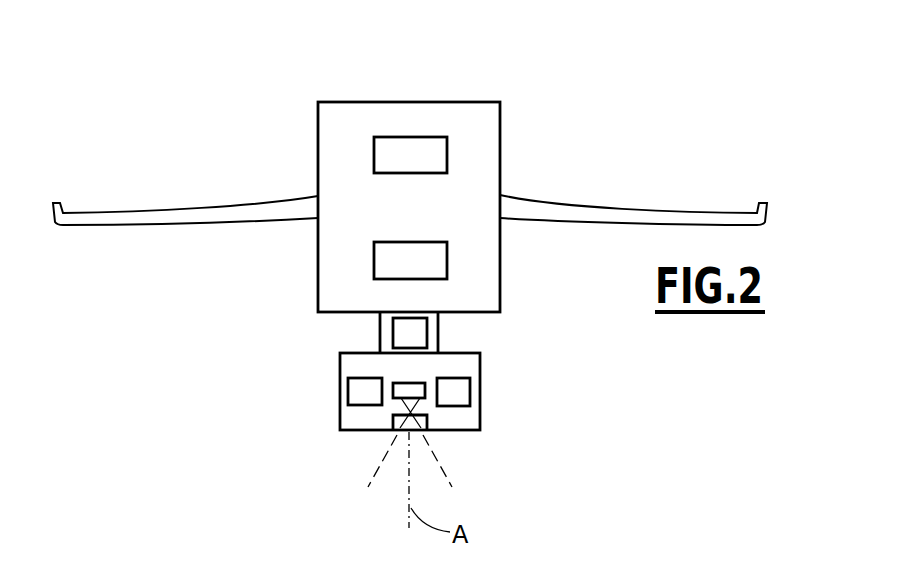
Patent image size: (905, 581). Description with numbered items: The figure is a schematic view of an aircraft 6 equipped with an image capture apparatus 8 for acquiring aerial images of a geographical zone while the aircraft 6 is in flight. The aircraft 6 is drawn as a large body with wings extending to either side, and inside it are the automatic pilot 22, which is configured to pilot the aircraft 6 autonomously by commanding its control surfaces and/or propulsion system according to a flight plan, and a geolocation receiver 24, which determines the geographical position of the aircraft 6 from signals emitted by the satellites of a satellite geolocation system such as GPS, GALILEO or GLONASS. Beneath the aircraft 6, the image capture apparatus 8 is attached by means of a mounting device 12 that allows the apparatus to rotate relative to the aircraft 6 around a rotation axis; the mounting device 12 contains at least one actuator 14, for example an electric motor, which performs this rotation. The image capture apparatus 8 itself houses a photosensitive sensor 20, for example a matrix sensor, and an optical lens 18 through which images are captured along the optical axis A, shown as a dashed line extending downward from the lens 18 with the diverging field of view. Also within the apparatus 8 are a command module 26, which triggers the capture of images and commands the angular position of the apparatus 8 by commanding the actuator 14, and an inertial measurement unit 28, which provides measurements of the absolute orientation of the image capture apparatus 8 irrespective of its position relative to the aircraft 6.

The aircraft 6 is at (503, 113).
The image capture apparatus 8 is at (484, 393).
The mounting device 12 is at (440, 336).
The actuator 14 is at (413, 317).
The optical lens 18 is at (397, 432).
The photosensitive sensor 20 is at (417, 383).
The automatic pilot 22 is at (447, 151).
The geolocation receiver 24 is at (447, 262).
The command module 26 is at (457, 406).
The inertial measurement unit 28 is at (348, 392).